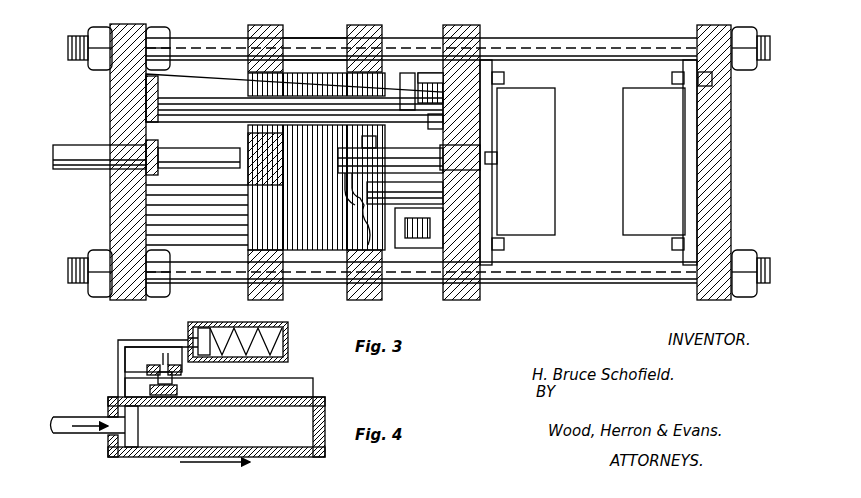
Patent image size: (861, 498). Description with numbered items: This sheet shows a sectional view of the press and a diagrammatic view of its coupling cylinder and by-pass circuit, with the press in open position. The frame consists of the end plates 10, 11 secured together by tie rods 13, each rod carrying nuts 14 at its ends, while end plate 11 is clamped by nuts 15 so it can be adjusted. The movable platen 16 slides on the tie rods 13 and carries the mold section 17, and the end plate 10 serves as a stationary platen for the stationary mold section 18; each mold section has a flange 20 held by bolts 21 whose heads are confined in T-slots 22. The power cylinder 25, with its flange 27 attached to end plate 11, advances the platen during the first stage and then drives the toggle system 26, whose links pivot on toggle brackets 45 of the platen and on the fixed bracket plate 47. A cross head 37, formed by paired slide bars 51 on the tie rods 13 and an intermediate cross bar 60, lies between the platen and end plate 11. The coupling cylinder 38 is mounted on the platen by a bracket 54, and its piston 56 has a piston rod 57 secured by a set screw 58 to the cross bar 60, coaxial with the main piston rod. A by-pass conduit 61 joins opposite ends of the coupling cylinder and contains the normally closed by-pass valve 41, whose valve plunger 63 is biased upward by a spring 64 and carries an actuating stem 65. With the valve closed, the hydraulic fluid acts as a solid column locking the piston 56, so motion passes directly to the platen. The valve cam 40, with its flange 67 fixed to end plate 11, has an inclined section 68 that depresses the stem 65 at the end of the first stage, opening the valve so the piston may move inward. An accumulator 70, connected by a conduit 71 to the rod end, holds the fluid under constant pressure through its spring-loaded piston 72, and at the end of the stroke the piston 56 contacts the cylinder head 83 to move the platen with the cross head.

In FIG. 3, the end plate 10 is at (720, 207).
In FIG. 3, the end plate 11 is at (118, 212).
In FIG. 3, the tie rods 13 is at (573, 53).
In FIG. 3, the nuts 14 is at (98, 32).
In FIG. 3, the nuts 15 is at (158, 32).
In FIG. 3, the movable platen 16 is at (470, 286).
In FIG. 3, the mold section 17 is at (554, 119).
In FIG. 3, the stationary mold section 18 is at (632, 207).
In FIG. 3, the flange 20 is at (489, 70).
In FIG. 3, the bolts 21 is at (672, 78).
In FIG. 3, the T-slots 22 is at (708, 80).
In FIG. 3, the power cylinder 25 is at (70, 170).
In FIG. 3, the toggle system 26 is at (407, 80).
In FIG. 3, the flange 27 is at (148, 178).
In FIG. 3, the cross head 37 is at (286, 30).
In FIG. 3, the coupling cylinder 38 is at (460, 155).
In FIG. 4, the coupling cylinder 38 is at (330, 408).
In FIG. 3, the valve cam 40 is at (232, 100).
In FIG. 3, the by-pass valve 41 is at (376, 148).
In FIG. 4, the by-pass valve 41 is at (160, 365).
In FIG. 3, the toggle brackets 45 is at (432, 80).
In FIG. 3, the bracket plate 47 is at (208, 225).
In FIG. 3, the slide bars 51 is at (258, 28).
In FIG. 3, the bracket 54 is at (443, 178).
In FIG. 4, the piston 56 is at (138, 432).
In FIG. 4, the piston rod 57 is at (68, 420).
In FIG. 3, the set screw 58 is at (250, 147).
In FIG. 3, the cross bar 60 is at (262, 200).
In FIG. 4, the by-pass conduit 61 is at (305, 378).
In FIG. 4, the valve plunger 63 is at (181, 369).
In FIG. 4, the spring 64 is at (178, 390).
In FIG. 4, the actuating stem 65 is at (166, 353).
In FIG. 3, the flange 67 is at (150, 98).
In FIG. 3, the inclined section 68 is at (445, 120).
In FIG. 3, the accumulator 70 is at (443, 212).
In FIG. 4, the accumulator 70 is at (288, 326).
In FIG. 3, the conduit 71 is at (372, 240).
In FIG. 4, the conduit 71 is at (118, 347).
In FIG. 4, the spring-loaded piston 72 is at (203, 325).
In FIG. 4, the cylinder head 83 is at (108, 450).